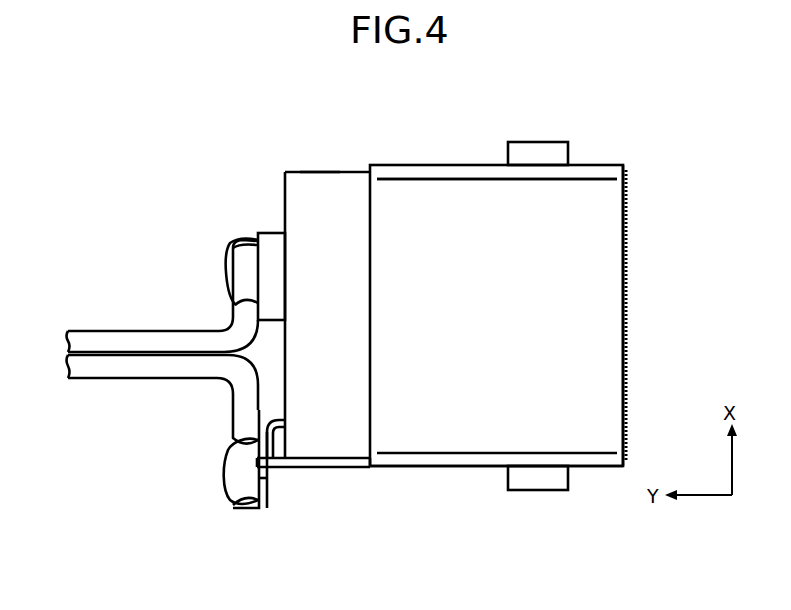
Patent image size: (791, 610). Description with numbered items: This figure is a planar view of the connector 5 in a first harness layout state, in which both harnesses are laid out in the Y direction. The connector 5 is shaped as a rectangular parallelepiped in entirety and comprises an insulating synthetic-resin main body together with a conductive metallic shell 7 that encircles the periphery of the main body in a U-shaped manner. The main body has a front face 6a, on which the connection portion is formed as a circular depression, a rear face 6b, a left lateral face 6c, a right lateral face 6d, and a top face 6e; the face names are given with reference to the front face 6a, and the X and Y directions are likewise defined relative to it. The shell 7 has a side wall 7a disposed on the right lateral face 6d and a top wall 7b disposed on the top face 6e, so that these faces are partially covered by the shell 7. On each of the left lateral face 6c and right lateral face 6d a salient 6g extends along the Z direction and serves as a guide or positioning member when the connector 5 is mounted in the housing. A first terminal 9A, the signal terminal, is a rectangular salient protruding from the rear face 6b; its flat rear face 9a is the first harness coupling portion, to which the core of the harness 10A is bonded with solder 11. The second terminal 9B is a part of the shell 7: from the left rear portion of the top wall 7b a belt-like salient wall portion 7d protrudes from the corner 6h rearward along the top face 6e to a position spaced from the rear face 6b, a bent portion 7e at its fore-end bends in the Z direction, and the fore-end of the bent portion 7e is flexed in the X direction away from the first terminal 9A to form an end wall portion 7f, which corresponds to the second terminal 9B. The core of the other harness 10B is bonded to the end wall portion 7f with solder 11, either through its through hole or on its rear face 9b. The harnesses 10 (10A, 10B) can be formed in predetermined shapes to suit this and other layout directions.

The connector 5 is at (610, 104).
The front face 6a is at (630, 212).
The rear face 6b is at (283, 183).
The left lateral face 6c is at (443, 467).
The right lateral face 6d is at (355, 170).
The top face 6e is at (322, 190).
The salient 6g is at (537, 155).
The corner 6h is at (290, 467).
The shell 7 is at (452, 160).
The side wall 7a is at (620, 165).
The top wall 7b is at (595, 190).
The salient wall portion 7d is at (347, 468).
The bent portion 7e is at (271, 422).
The end wall portion 7f is at (262, 510).
The first terminal 9A is at (232, 225).
The rear face 9a is at (257, 236).
The second terminal 9B is at (270, 500).
The rear face 9b is at (258, 478).
The harness 10 is at (145, 349).
The harness 10A is at (87, 322).
The harness 10B is at (87, 388).
The solder 11 is at (233, 292).